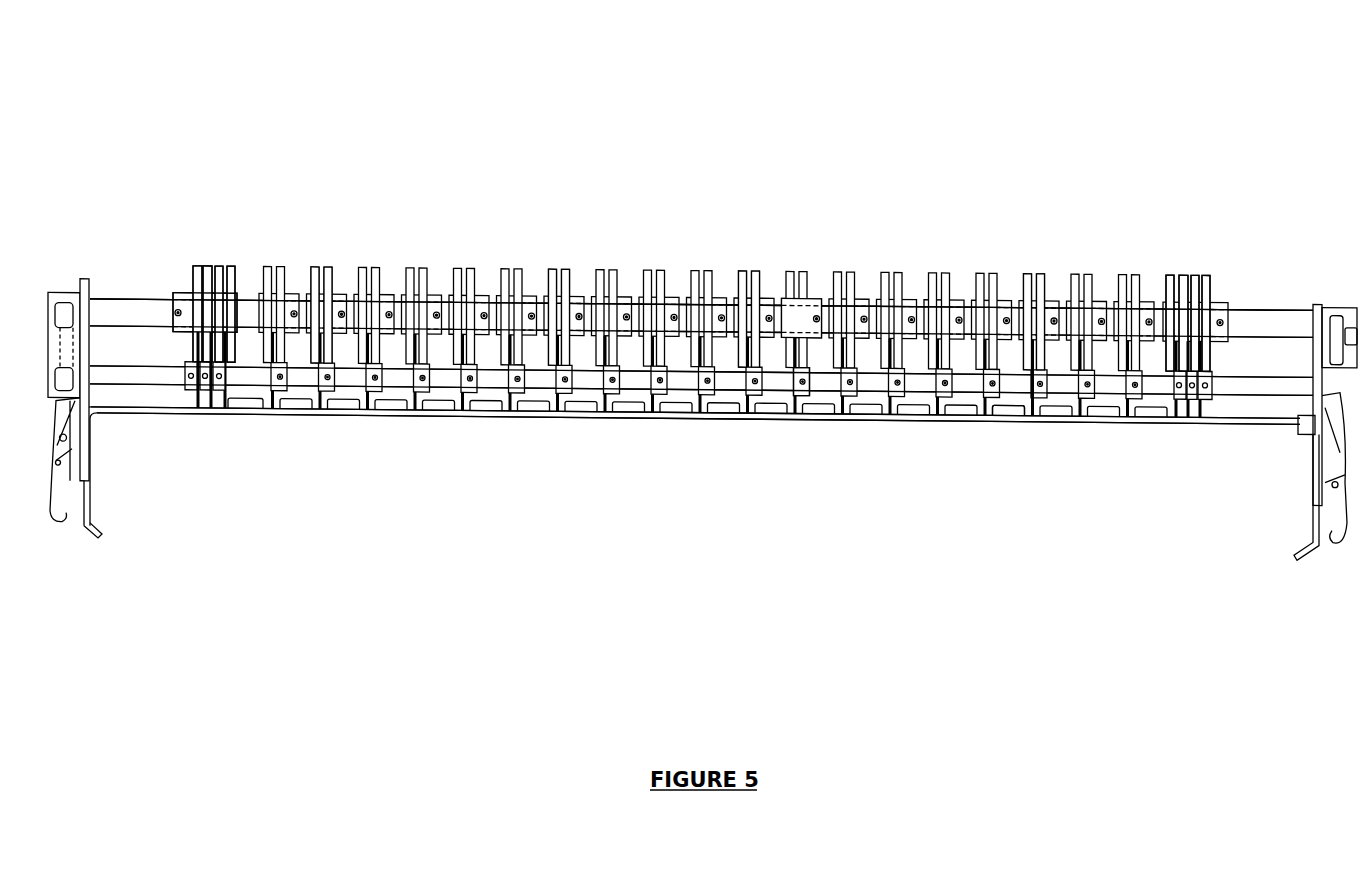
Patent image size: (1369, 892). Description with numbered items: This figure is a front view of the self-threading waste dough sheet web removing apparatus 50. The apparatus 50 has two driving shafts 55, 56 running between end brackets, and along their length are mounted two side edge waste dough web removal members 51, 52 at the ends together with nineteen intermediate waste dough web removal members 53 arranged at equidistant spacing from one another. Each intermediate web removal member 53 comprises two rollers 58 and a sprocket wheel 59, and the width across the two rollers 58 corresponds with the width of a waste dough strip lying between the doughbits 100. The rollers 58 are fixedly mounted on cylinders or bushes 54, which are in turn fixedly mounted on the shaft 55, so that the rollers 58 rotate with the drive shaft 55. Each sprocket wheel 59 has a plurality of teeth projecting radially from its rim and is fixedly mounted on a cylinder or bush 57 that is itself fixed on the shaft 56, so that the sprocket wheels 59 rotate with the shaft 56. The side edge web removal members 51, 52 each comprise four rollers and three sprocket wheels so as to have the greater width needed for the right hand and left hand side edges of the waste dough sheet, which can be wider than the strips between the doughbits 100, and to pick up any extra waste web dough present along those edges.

The waste dough sheet web removing apparatus 50 is at (1023, 138).
The side edge waste dough web removal member 51 is at (1192, 267).
The side edge waste dough web removal member 52 is at (218, 253).
The intermediate waste dough web removal member 53 is at (315, 270).
The cylinder or bush 54 is at (810, 318).
The driving shaft 55 is at (1274, 322).
The driving shaft 56 is at (1288, 395).
The cylinder or bush 57 is at (805, 384).
The roller 58 is at (188, 273).
The sprocket wheel 59 is at (1030, 420).
The doughbit 100 is at (1145, 420).